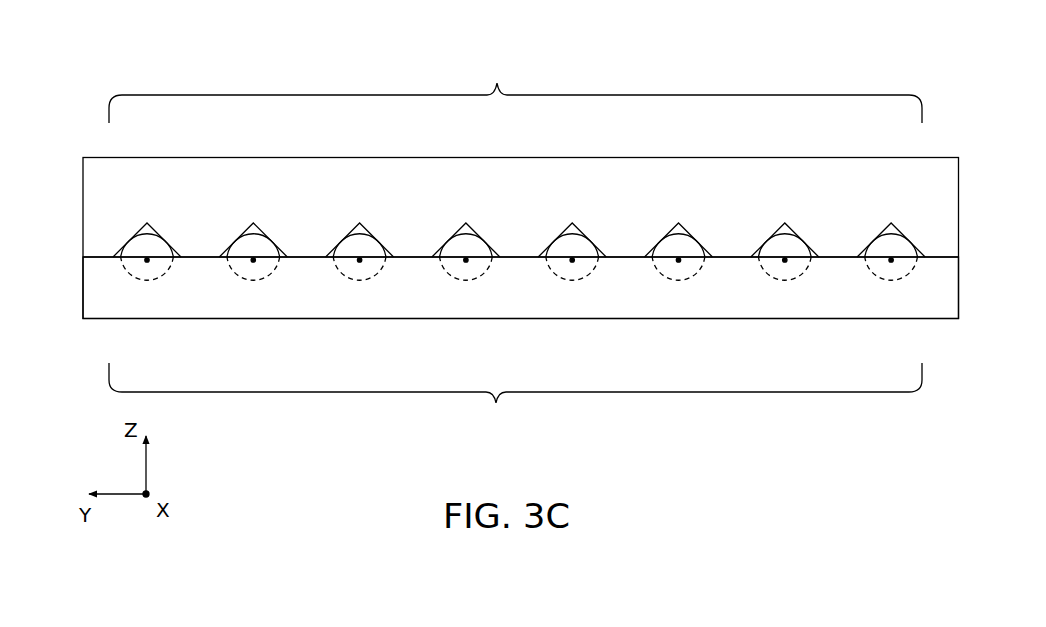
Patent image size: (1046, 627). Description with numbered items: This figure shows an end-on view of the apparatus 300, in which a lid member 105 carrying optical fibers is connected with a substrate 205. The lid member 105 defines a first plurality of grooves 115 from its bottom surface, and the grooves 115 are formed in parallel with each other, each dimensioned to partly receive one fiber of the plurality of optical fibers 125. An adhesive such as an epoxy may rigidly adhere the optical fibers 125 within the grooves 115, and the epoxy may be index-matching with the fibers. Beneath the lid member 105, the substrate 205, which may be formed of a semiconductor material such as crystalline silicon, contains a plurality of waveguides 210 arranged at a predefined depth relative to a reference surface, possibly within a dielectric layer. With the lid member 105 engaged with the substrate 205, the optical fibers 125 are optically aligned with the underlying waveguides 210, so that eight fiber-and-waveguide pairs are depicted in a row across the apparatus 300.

The apparatus 300 is at (116, 78).
The lid member 105 is at (383, 160).
The first plurality of grooves 115 is at (515, 77).
The plurality of optical fibers 125 is at (497, 83).
The substrate 205 is at (858, 320).
The plurality of waveguides 210 is at (496, 403).